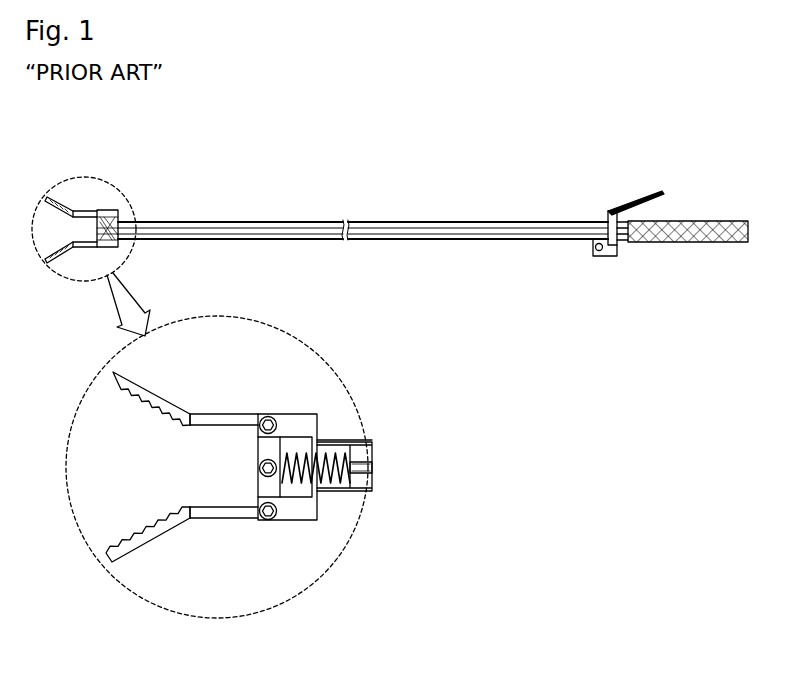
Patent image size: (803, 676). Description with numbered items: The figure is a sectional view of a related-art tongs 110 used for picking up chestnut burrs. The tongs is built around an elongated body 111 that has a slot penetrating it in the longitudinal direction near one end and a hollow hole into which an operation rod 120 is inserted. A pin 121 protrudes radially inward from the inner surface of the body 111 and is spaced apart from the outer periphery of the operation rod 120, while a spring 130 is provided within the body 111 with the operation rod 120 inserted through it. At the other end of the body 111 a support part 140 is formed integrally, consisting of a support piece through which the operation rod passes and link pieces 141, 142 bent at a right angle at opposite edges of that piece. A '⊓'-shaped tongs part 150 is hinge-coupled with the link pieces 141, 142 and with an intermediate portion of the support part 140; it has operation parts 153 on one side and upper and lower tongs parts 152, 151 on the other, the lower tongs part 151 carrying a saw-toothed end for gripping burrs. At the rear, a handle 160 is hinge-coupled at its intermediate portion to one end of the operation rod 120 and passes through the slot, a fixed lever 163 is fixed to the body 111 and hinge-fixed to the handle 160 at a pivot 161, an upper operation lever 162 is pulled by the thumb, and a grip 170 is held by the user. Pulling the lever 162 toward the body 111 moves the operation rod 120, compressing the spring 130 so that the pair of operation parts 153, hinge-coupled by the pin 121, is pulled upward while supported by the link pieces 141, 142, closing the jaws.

The surgical grasping instrument 110 is at (405, 219).
The body 111 is at (525, 222).
The operation rod 120 is at (470, 231).
The pin 121 is at (360, 442).
The spring 130 is at (332, 498).
The support part 140 is at (319, 412).
The link piece 141 is at (300, 521).
The link piece 142 is at (285, 413).
The tongs part 150 is at (233, 410).
The lower tongs part 151 is at (114, 373).
The upper tongs part 152 is at (205, 413).
The operation part 153 is at (288, 446).
The handle 160 is at (627, 196).
The pivot bracket 161 is at (617, 248).
The upper operation lever 162 is at (664, 193).
The fixed lever 163 is at (597, 253).
The grip handle 170 is at (744, 220).